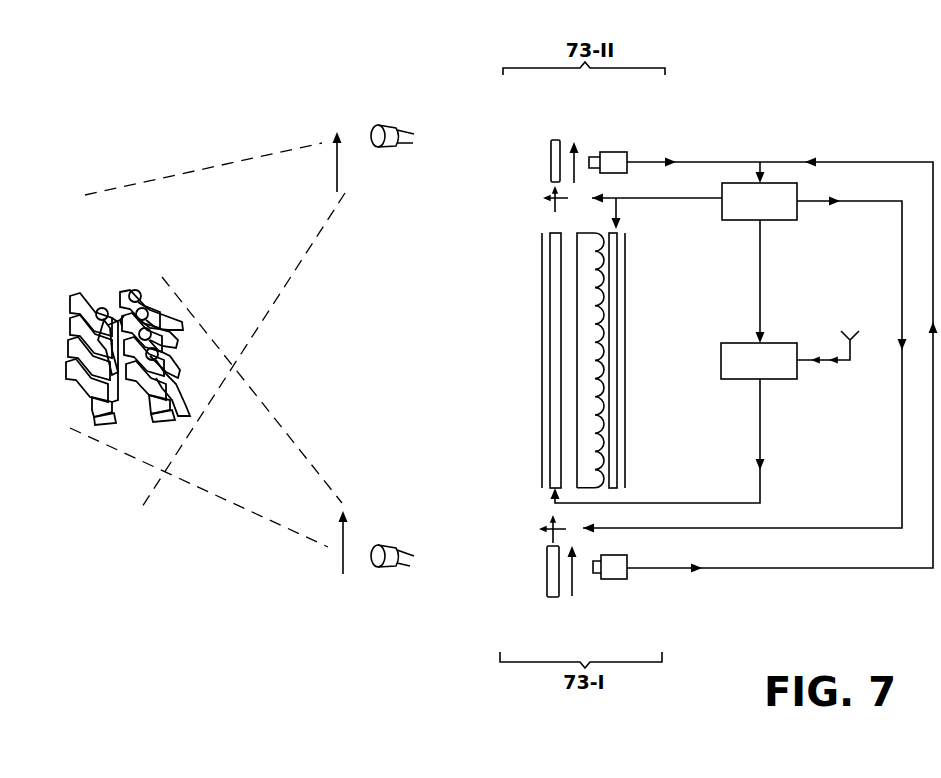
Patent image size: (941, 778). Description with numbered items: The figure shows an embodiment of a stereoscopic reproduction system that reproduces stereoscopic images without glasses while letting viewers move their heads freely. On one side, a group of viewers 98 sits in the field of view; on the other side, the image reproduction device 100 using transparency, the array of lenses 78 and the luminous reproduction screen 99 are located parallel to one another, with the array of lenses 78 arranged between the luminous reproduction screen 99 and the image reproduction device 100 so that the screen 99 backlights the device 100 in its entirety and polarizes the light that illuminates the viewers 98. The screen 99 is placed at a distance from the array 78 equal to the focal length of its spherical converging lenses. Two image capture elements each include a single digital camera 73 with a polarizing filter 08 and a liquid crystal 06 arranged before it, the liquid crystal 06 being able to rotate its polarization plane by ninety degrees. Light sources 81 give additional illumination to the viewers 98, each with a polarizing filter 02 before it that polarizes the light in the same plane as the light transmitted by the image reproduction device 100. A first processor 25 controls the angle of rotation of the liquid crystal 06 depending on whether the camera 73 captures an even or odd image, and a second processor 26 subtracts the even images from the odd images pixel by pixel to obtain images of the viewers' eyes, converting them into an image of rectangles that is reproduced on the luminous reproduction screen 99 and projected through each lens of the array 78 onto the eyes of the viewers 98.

The polarizing filter 02 is at (335, 163).
The light source 81 is at (412, 125).
The viewers 98 is at (123, 307).
The liquid crystal 06 is at (552, 155).
The polarizing filter 08 is at (575, 140).
The digital camera 73 is at (613, 153).
The first processor 25 is at (772, 182).
The second processor 26 is at (767, 347).
The image reproduction device 100 is at (557, 233).
The array of lenses 78 is at (604, 355).
The luminous reproduction screen 99 is at (619, 307).